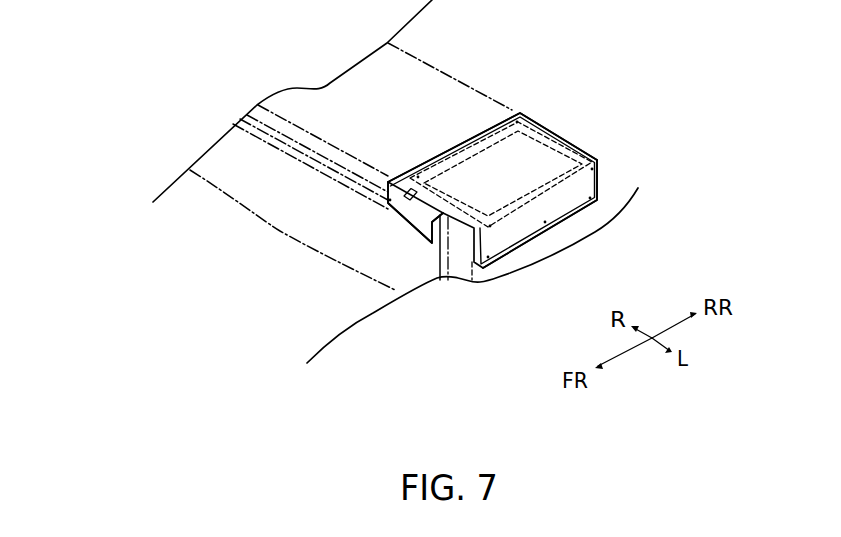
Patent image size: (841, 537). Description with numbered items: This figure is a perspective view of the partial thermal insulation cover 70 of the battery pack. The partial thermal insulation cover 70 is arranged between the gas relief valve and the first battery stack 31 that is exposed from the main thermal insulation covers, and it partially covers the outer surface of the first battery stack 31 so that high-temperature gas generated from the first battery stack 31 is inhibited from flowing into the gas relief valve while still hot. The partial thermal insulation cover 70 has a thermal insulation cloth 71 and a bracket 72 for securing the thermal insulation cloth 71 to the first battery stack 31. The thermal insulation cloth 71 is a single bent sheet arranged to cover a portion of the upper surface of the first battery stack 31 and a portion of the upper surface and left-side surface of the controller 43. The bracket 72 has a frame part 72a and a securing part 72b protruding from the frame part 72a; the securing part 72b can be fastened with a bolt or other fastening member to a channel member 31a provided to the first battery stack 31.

The first battery stack 31 is at (333, 253).
The channel member 31a is at (327, 177).
The controller 43 is at (459, 268).
The partial thermal insulation cover 70 is at (508, 203).
The thermal insulation cloth 71 is at (543, 128).
The bracket 72 is at (597, 158).
The frame part 72a is at (493, 126).
The securing part 72b is at (401, 203).